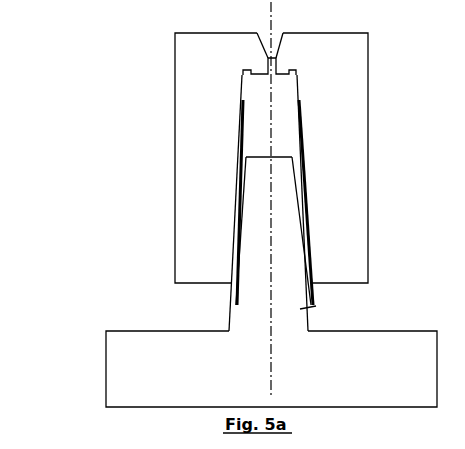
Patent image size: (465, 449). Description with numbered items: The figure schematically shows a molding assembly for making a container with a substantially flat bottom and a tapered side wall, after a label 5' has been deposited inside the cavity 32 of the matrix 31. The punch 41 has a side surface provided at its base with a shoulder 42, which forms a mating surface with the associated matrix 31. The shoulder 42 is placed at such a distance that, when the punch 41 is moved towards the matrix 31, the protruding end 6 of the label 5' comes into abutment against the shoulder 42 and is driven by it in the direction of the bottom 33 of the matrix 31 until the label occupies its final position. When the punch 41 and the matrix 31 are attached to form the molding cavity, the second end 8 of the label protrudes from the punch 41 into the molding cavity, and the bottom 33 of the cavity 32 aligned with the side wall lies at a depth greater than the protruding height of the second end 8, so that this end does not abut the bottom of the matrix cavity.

The matrix 31 is at (203, 146).
The cavity of the matrix 32 is at (283, 132).
The bottom of the cavity 33 is at (281, 62).
The second end of the label 8 is at (302, 103).
The label 5' is at (195, 203).
The protruding end of the label 6 is at (228, 288).
The punch 41 is at (303, 308).
The shoulder of the punch forming a mating surface 42 is at (229, 333).